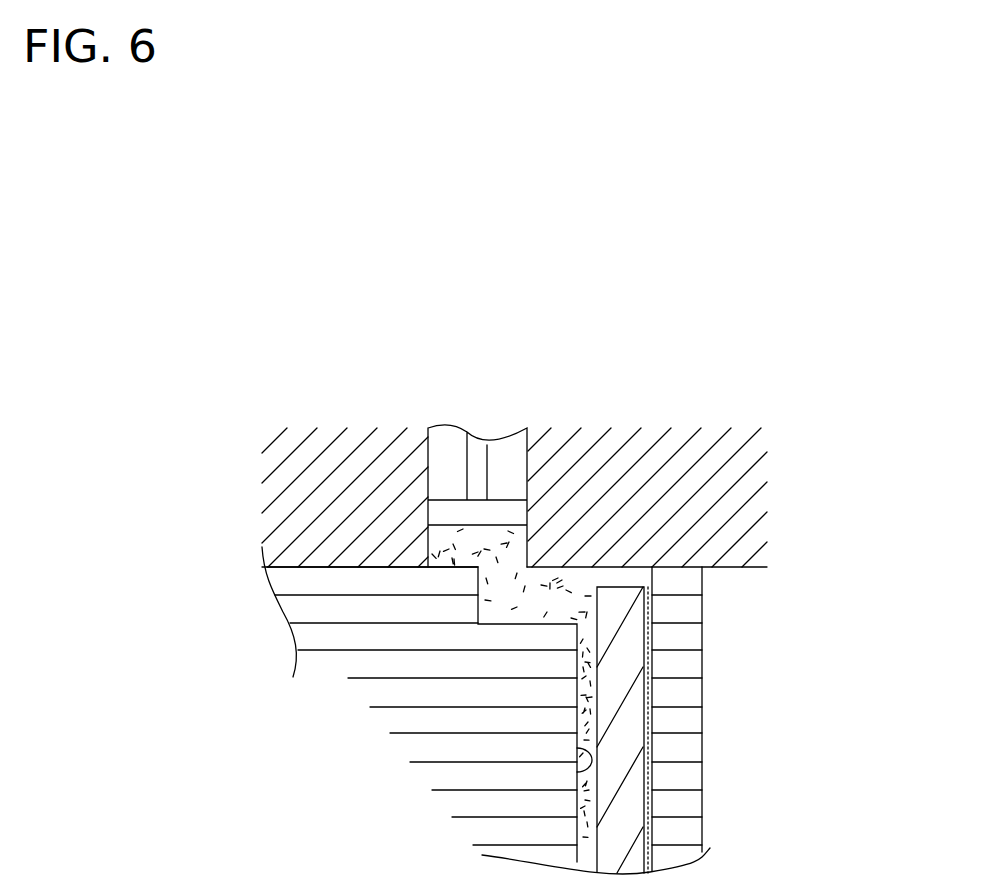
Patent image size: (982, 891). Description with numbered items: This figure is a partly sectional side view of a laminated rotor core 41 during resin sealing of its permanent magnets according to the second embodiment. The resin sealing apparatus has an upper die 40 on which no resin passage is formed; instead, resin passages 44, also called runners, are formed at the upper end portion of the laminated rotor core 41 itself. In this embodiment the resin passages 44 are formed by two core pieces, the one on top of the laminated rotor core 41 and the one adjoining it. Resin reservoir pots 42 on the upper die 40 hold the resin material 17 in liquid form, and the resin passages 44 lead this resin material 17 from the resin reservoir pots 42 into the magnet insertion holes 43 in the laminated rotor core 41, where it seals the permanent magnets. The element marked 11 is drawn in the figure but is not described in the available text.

The upper die 40 is at (691, 403).
The laminated rotor core 41 is at (716, 651).
The resin reservoir pot 42 is at (443, 548).
The resin passage 44 is at (534, 584).
The resin material 17 is at (577, 667).
The magnet insertion hole 43 is at (577, 748).
The bar member 11 is at (630, 740).